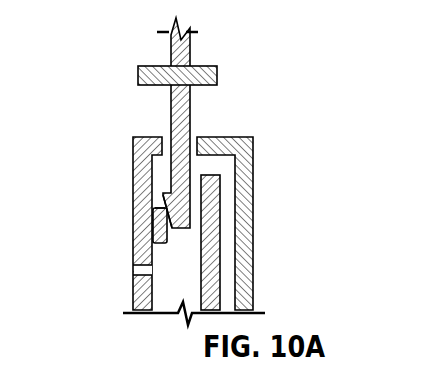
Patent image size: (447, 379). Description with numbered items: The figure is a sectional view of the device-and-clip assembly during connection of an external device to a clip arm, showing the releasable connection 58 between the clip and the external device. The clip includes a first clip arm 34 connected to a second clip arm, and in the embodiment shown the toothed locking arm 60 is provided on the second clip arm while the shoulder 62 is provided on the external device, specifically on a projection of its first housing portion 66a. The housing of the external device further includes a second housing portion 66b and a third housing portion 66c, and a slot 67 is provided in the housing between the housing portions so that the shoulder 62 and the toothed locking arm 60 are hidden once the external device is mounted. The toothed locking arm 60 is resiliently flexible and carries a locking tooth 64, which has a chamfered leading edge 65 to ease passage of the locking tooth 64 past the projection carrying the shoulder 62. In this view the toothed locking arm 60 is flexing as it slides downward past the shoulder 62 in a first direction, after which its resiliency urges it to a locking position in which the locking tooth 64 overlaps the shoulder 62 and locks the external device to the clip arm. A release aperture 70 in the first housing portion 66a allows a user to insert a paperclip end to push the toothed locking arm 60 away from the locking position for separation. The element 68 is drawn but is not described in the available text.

The first clip arm 34 is at (183, 53).
The toothed locking arm 60 is at (186, 129).
The chamfered leading edge 65 is at (171, 230).
The collar 68 is at (140, 76).
The slot 67 is at (159, 121).
The first housing portion 66a is at (140, 158).
The second housing portion 66b is at (245, 190).
The third housing portion 66c is at (212, 229).
The release aperture 70 is at (125, 269).
The releasable connection 58 is at (93, 225).
The shoulder 62 is at (158, 247).
The locking tooth 64 is at (165, 207).